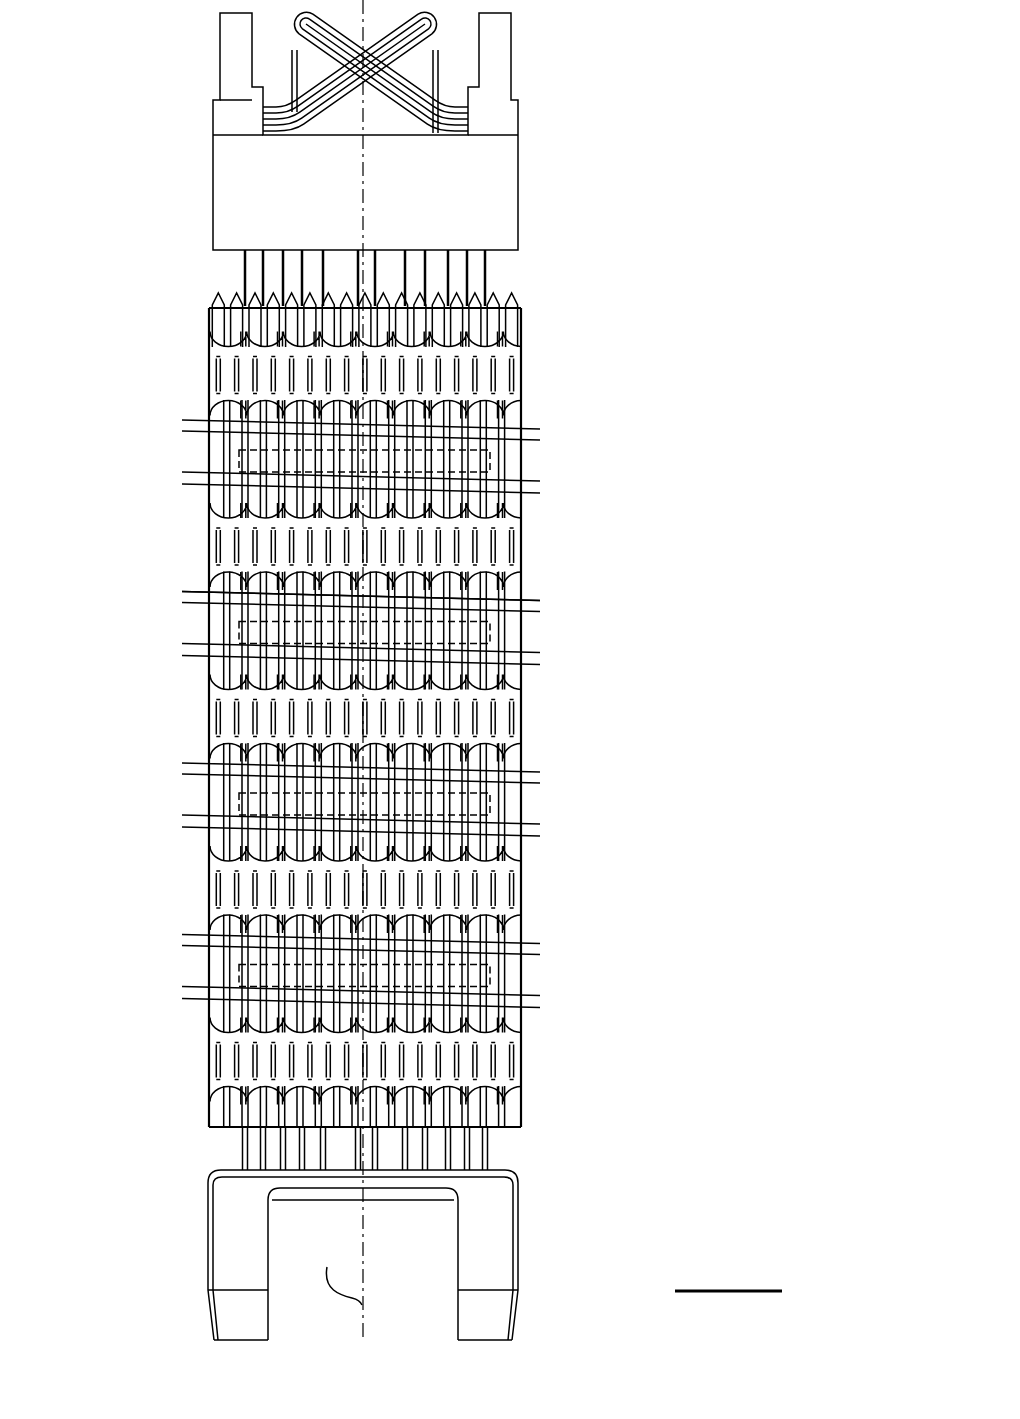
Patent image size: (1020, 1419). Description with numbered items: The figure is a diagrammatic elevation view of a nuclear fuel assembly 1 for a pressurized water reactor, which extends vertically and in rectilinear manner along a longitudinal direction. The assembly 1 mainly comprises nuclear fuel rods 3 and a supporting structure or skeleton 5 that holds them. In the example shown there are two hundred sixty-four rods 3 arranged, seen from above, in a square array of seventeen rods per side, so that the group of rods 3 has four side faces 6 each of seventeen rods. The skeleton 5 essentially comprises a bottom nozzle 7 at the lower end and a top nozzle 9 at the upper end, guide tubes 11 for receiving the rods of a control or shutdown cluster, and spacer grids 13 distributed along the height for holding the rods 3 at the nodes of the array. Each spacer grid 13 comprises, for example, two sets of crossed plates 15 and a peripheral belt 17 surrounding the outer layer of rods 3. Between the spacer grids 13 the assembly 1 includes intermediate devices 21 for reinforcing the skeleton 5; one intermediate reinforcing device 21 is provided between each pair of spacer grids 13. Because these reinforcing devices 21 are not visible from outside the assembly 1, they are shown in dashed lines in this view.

The nuclear fuel assembly 1 is at (445, 670).
The nuclear fuel rods 3 is at (517, 318).
The skeleton 5 is at (426, 131).
The side faces 6 is at (470, 603).
The bottom nozzle 7 is at (490, 1256).
The top nozzle 9 is at (493, 197).
The guide tubes 11 is at (293, 271).
The spacer grids 13 is at (341, 717).
The crossed plates 15 is at (497, 367).
The peripheral belt 17 is at (503, 383).
The intermediate reinforcing devices 21 is at (502, 461).